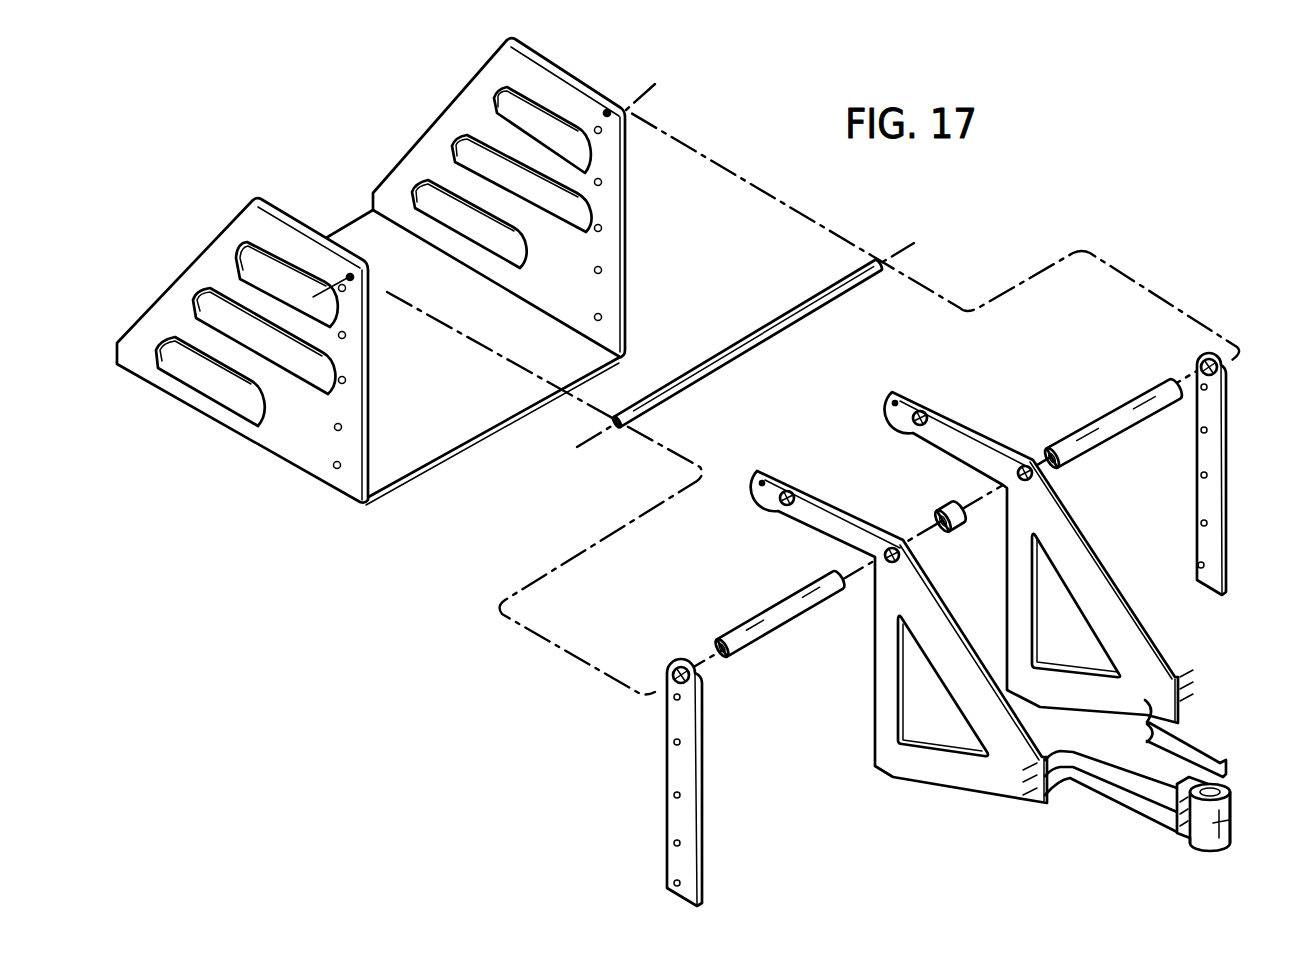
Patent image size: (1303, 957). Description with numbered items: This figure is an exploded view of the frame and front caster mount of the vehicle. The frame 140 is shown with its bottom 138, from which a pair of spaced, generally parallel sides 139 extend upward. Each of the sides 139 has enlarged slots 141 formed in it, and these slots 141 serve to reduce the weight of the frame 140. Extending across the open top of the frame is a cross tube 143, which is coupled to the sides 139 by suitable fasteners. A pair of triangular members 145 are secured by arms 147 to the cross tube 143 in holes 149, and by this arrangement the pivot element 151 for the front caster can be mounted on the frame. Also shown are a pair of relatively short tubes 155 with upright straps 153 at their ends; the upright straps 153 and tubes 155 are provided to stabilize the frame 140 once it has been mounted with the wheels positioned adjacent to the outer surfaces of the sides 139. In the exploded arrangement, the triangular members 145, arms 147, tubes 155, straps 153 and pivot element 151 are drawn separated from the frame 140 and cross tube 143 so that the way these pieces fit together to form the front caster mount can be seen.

The bottom 138 is at (447, 435).
The sides 139 is at (608, 287).
The frame 140 is at (408, 483).
The slots 141 is at (582, 215).
The cross tube 143 is at (780, 330).
The triangular members 145 is at (974, 594).
The arms 147 is at (957, 579).
The holes 149 is at (920, 407).
The pivot element 151 is at (1230, 818).
The upright straps 153 is at (703, 820).
The tubes 155 is at (768, 613).